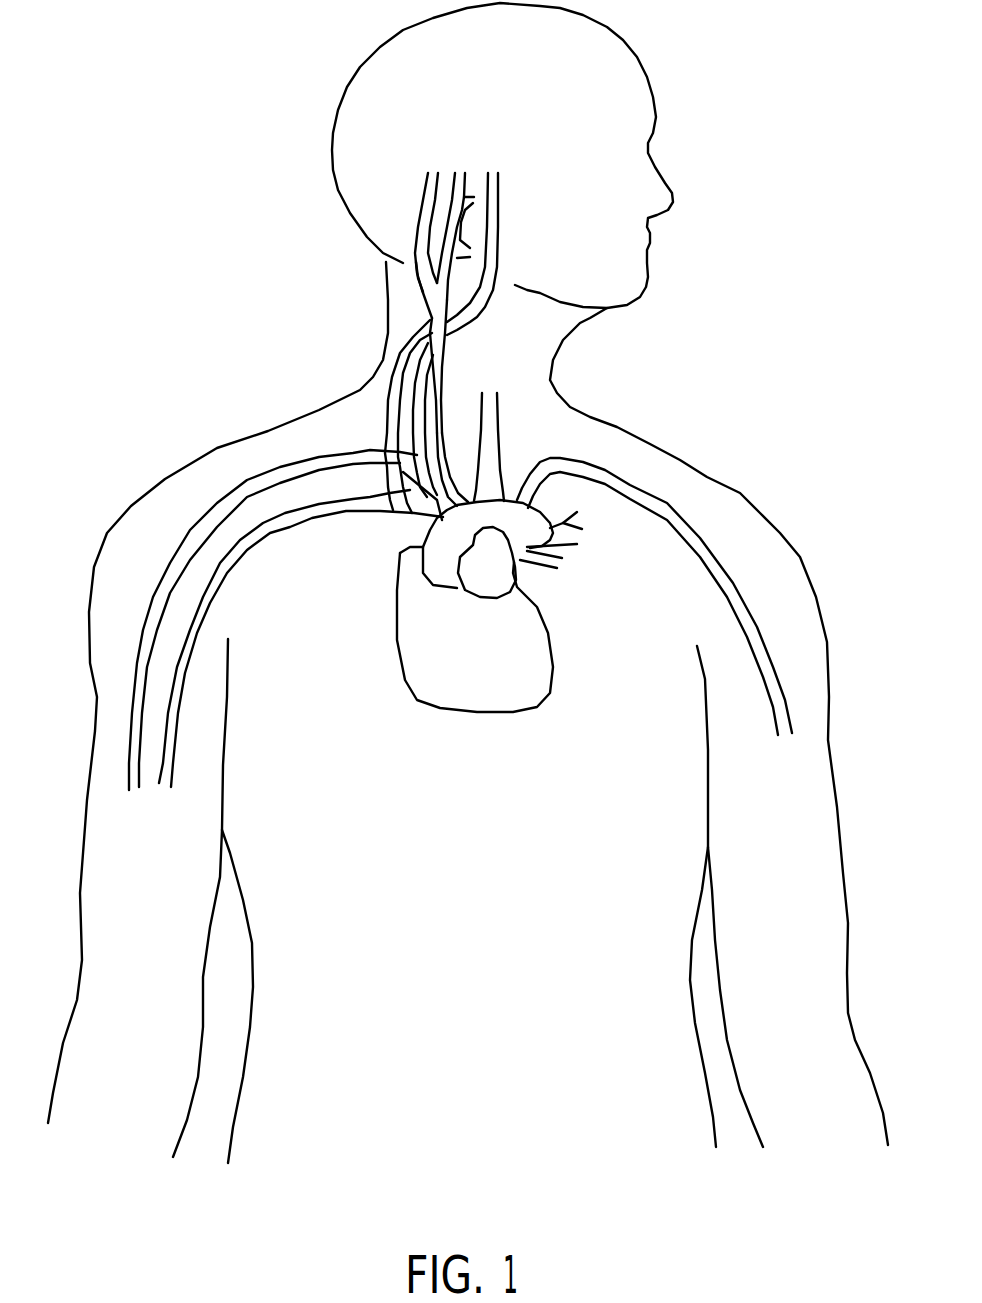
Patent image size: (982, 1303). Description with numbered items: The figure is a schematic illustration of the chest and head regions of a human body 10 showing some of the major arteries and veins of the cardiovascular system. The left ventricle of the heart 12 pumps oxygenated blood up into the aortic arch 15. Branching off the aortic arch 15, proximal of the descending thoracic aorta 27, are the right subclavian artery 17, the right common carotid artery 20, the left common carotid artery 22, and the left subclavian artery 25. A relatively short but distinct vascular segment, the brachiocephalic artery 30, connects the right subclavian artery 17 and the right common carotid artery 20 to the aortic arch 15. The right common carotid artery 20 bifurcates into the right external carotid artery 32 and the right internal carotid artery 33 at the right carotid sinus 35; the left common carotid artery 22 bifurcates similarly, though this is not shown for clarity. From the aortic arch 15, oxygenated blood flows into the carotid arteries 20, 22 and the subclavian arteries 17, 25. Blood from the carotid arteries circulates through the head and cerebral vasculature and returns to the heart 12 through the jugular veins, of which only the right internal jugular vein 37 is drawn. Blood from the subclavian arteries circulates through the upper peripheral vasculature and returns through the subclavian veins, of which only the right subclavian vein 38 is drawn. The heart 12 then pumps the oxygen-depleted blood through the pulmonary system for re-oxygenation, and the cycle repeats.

The human body 10 is at (265, 300).
The heart 12 is at (510, 629).
The aortic arch 15 is at (444, 549).
The right subclavian artery 17 is at (283, 555).
The right common carotid artery 20 is at (471, 366).
The left common carotid artery 22 is at (516, 447).
The left subclavian artery 25 is at (654, 567).
The descending thoracic aorta 27 is at (575, 533).
The brachiocephalic artery 30 is at (456, 454).
The right external carotid artery 32 is at (401, 243).
The right internal carotid artery 33 is at (464, 209).
The right carotid sinus 35 is at (369, 278).
The right internal jugular vein 37 is at (505, 254).
The right subclavian vein 38 is at (301, 629).